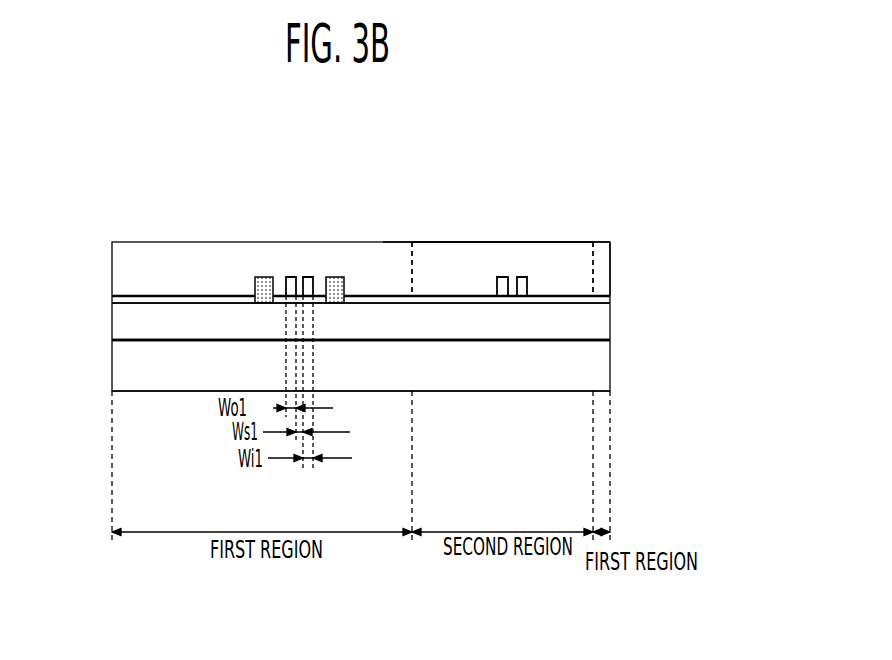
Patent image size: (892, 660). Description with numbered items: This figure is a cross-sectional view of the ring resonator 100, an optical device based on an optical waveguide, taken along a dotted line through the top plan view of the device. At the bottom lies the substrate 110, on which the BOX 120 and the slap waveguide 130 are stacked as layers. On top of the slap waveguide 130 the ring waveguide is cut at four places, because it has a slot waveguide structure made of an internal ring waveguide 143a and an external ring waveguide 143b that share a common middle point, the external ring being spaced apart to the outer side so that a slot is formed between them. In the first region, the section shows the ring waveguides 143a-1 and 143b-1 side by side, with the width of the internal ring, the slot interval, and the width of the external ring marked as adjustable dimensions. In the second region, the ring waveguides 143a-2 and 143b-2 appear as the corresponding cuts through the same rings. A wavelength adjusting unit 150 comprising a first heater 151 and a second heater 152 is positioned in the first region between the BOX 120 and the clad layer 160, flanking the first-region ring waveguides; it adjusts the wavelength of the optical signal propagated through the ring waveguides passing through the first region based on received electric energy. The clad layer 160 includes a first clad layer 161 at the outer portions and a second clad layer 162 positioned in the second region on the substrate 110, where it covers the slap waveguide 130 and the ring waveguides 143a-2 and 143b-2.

The ring resonator 100 is at (605, 118).
The substrate 110 is at (600, 370).
The BOX 120 is at (600, 327).
The slap waveguide 130 is at (600, 302).
The internal ring waveguide 143a is at (423, 370).
The ring waveguide 143a-1 is at (291, 292).
The ring waveguide 143a-2 is at (501, 292).
The external ring waveguide 143b is at (445, 398).
The ring waveguide 143b-1 is at (309, 292).
The ring waveguide 143b-2 is at (523, 292).
The wavelength adjusting unit 150 is at (301, 226).
The first heater 151 is at (262, 277).
The second heater 152 is at (335, 277).
The clad layer 160 is at (499, 222).
The first clad layer 161 is at (397, 252).
The second clad layer 162 is at (502, 238).